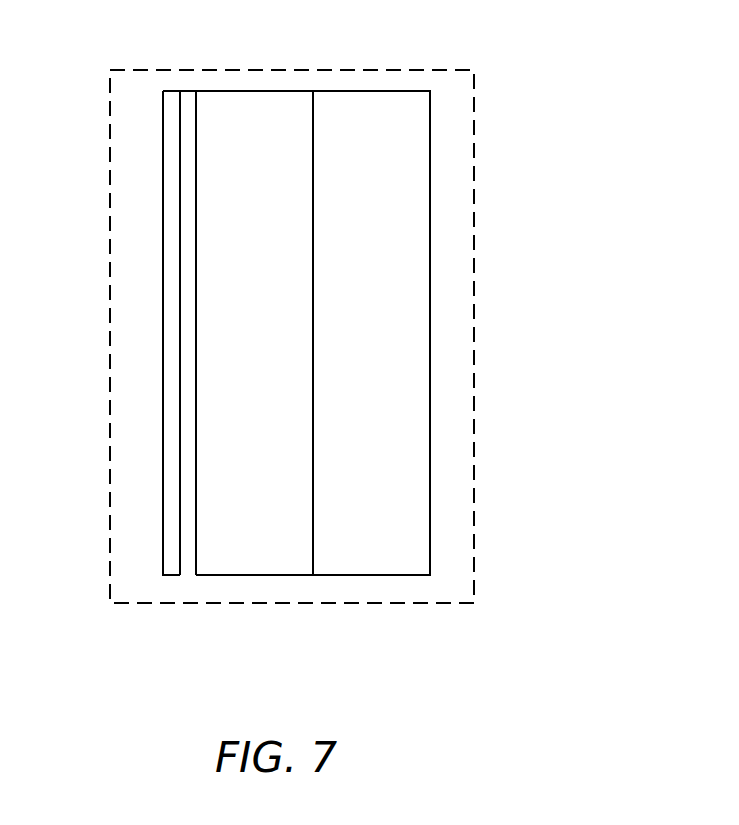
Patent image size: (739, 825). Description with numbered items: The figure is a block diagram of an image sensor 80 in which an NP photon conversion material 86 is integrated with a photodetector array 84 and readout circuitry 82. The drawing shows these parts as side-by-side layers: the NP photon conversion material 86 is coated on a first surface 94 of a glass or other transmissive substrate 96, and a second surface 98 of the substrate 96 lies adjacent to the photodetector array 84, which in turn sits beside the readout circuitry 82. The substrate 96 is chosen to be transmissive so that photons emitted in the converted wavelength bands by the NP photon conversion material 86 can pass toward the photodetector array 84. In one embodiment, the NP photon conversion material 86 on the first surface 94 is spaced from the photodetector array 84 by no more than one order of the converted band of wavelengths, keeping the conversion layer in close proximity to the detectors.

The image sensor 80 is at (448, 70).
The readout circuitry 82 is at (420, 541).
The photodetector array 84 is at (279, 563).
The NP photon conversion material 86 is at (171, 565).
The first surface 94 is at (179, 200).
The transmissive substrate 96 is at (187, 104).
The second surface 98 is at (196, 247).